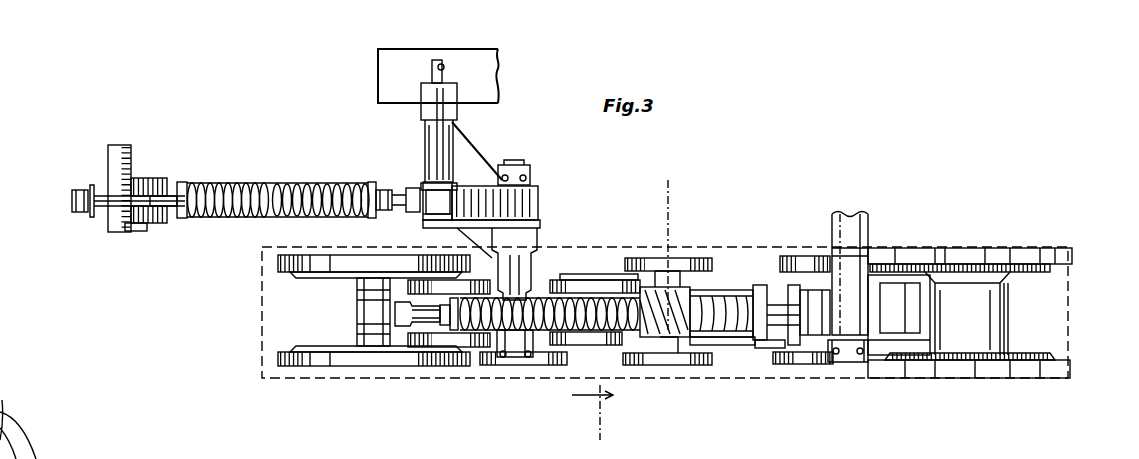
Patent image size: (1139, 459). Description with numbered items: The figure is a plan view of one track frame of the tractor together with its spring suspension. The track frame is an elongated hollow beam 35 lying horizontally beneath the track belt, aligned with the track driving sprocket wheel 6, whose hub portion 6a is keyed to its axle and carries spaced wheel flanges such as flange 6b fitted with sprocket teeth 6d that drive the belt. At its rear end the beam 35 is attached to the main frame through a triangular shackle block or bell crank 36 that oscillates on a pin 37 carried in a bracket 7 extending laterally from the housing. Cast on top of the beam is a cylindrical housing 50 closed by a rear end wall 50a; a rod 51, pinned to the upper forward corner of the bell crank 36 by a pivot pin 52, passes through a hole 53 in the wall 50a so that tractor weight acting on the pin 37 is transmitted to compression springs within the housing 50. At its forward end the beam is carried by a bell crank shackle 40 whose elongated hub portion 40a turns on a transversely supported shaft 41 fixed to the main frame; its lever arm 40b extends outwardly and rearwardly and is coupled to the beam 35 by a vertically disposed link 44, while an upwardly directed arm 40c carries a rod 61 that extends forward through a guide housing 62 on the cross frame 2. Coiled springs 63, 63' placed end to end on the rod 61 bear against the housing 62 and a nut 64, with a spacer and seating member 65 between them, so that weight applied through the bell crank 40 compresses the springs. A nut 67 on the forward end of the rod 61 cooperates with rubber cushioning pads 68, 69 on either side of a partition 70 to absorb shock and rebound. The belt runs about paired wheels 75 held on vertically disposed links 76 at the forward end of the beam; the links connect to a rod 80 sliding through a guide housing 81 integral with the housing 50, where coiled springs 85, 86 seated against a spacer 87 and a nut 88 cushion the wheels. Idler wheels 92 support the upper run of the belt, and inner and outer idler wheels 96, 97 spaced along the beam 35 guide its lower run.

The cross frame 2 is at (110, 150).
The track driving sprocket wheel 6 is at (985, 362).
The hub portion 6a is at (1003, 312).
The wheel flange 6b is at (1062, 266).
The sprocket teeth 6d is at (1015, 257).
The bracket 7 is at (896, 212).
The track frame beam 35 is at (418, 340).
The triangular shackle block (bell crank) 36 is at (832, 352).
The pin 37 is at (860, 212).
The bell crank shackle 40 is at (455, 190).
The hub portion 40a is at (445, 138).
The lever arm 40b is at (490, 197).
The upwardly directed arm 40c is at (432, 195).
The shaft 41 is at (432, 66).
The link 44 is at (515, 285).
The cylindrical housing 50 is at (720, 292).
The rear end wall 50a is at (772, 266).
The rod 51 is at (770, 348).
The pivot pin 52 is at (790, 348).
The hole 53 is at (738, 346).
The rod 61 is at (118, 210).
The guide housing 62 is at (158, 178).
The coiled spring 63 is at (223, 183).
The coiled spring 63' is at (321, 181).
The nut 64 is at (380, 185).
The spacer and seating member 65 is at (266, 180).
The nut 67 is at (80, 188).
The rubber cushioning pad 68 is at (132, 232).
The rubber cushioning pad 69 is at (170, 215).
The partition 70 is at (150, 224).
The wheels 75 is at (272, 256).
The links 76 is at (350, 292).
The rod 80 is at (400, 312).
The guide housing 81 is at (688, 282).
The coiled spring 85 is at (498, 335).
The coiled spring 86 is at (618, 282).
The spacer 87 is at (568, 283).
The nut 88 is at (448, 330).
The idler wheels 92 is at (648, 260).
The inner idler wheels 96 is at (580, 345).
The outer idler wheels 97 is at (540, 368).